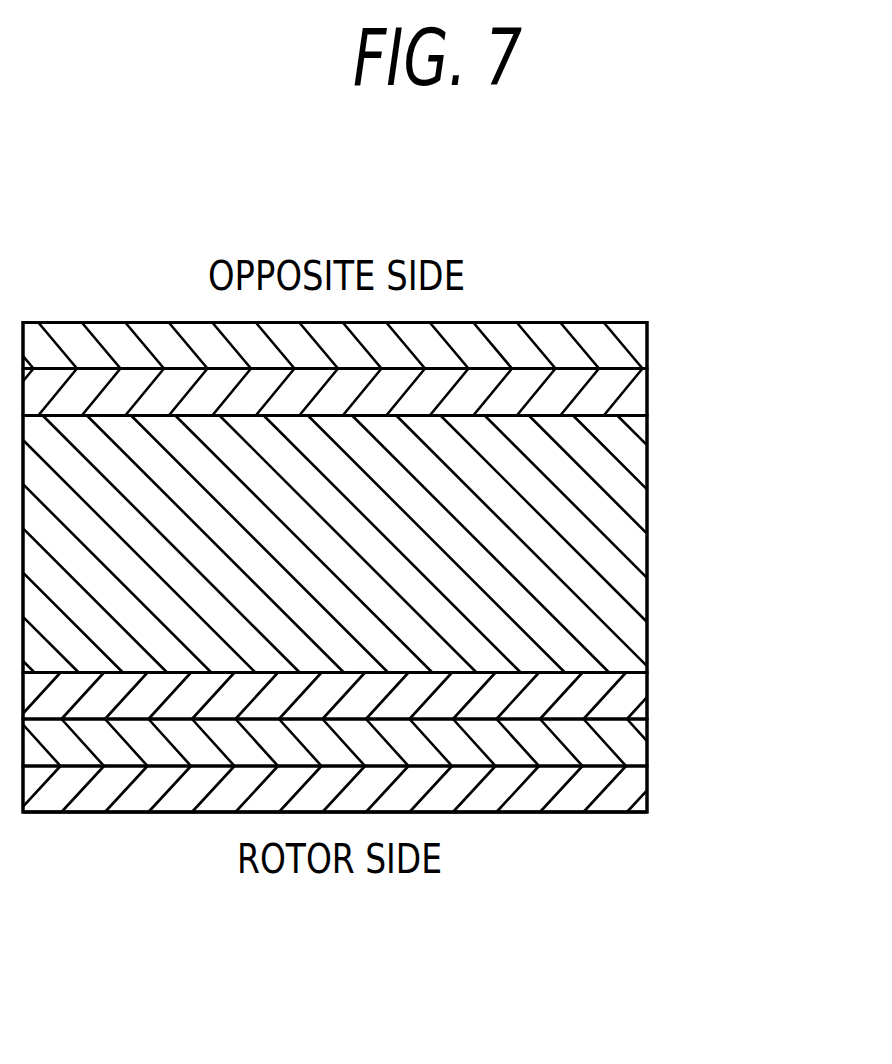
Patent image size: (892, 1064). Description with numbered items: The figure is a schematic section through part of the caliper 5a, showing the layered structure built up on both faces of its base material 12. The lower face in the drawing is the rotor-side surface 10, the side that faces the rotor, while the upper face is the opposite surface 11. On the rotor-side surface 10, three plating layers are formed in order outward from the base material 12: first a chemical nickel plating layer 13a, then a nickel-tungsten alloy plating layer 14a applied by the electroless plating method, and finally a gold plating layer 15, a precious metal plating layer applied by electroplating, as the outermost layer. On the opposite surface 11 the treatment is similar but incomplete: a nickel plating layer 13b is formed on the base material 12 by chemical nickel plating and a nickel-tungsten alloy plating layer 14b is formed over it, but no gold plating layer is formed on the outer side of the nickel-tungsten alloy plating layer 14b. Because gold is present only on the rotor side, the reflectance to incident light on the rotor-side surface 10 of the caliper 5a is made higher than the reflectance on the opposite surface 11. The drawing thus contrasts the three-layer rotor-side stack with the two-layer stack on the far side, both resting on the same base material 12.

The caliper 5a is at (726, 487).
The rotor-side surface 10 is at (110, 813).
The opposite surface 11 is at (110, 322).
The base material 12 is at (563, 547).
The nickel plating layer 13a is at (633, 698).
The nickel plating layer 13b is at (633, 397).
The nickel-tungsten alloy plating layer 14a is at (633, 746).
The nickel-tungsten alloy plating layer 14b is at (633, 343).
The gold plating layer 15 is at (633, 793).